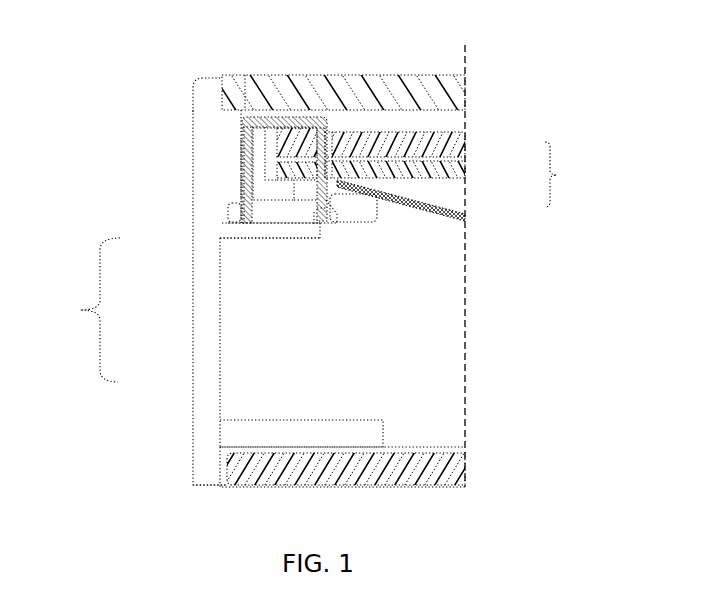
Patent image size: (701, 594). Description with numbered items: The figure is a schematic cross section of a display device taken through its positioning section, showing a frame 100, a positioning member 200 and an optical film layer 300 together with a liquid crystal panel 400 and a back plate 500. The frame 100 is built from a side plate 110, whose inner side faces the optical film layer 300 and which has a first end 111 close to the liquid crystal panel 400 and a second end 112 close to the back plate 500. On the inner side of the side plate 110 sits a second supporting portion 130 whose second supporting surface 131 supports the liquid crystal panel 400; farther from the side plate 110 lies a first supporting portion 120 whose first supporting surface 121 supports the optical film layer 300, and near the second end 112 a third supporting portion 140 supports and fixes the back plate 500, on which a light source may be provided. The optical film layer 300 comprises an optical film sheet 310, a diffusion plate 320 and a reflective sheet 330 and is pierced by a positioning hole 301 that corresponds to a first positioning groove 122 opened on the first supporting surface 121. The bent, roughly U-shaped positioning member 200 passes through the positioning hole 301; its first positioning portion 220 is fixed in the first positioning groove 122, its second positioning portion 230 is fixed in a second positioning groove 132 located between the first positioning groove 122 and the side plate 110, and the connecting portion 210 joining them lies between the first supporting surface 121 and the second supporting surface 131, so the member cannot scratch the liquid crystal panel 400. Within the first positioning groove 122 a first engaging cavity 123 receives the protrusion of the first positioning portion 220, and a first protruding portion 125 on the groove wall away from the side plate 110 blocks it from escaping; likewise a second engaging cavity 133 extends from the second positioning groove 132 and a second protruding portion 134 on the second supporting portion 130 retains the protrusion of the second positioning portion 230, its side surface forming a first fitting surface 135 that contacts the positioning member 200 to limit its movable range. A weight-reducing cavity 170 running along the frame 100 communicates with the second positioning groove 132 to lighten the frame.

The frame 100 is at (76, 310).
The side plate 110 is at (210, 350).
The first end 111 is at (205, 83).
The second end 112 is at (210, 483).
The first supporting portion 120 is at (265, 238).
The first supporting surface 121 is at (290, 188).
The first positioning groove 122 is at (314, 205).
The first engaging cavity 123 is at (327, 208).
The first protruding portion 125 is at (330, 195).
The second supporting portion 130 is at (238, 227).
The second supporting surface 131 is at (243, 108).
The second positioning groove 132 is at (240, 180).
The second engaging cavity 133 is at (230, 216).
The second protruding portion 134 is at (233, 157).
The first fitting surface 135 is at (241, 126).
The third supporting portion 140 is at (258, 427).
The weight-reducing cavity 170 is at (262, 213).
The positioning member 200 is at (306, 117).
The connecting portion 210 is at (328, 128).
The first positioning portion 220 is at (328, 215).
The second positioning portion 230 is at (241, 147).
The optical film layer 300 is at (432, 173).
The positioning hole 301 is at (335, 128).
The optical film sheet 310 is at (453, 140).
The diffusion plate 320 is at (457, 170).
The reflective sheet 330 is at (453, 207).
The liquid crystal panel 400 is at (403, 93).
The back plate 500 is at (450, 460).